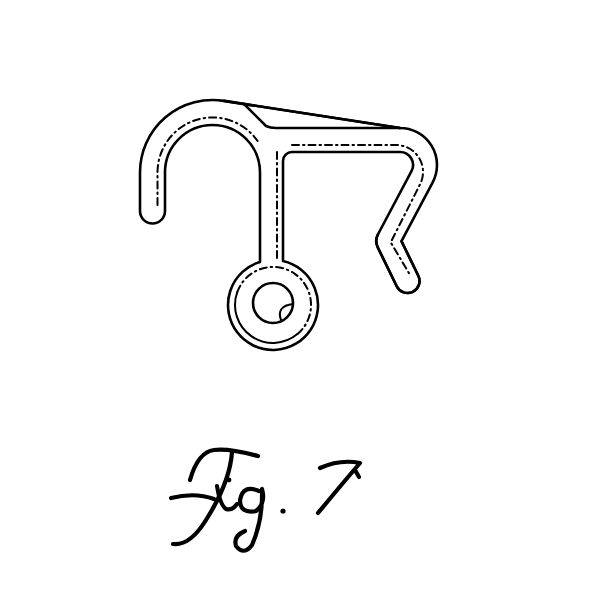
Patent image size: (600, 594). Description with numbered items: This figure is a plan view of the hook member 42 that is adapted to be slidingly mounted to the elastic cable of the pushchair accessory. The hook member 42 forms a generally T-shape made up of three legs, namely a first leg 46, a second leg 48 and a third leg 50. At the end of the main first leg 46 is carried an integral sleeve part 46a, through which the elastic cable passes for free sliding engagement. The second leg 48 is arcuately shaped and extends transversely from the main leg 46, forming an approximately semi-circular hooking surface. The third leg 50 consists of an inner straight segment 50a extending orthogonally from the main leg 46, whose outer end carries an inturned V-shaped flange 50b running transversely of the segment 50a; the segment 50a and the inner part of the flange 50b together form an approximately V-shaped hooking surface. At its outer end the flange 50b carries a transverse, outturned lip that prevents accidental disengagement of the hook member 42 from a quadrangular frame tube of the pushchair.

The hook member 42 is at (229, 286).
The first leg 46 is at (262, 215).
The sleeve part 46a is at (290, 307).
The second leg 48 is at (155, 193).
The third leg 50 is at (396, 127).
The inner straight segment 50a is at (333, 138).
The V-shaped flange 50b is at (400, 243).